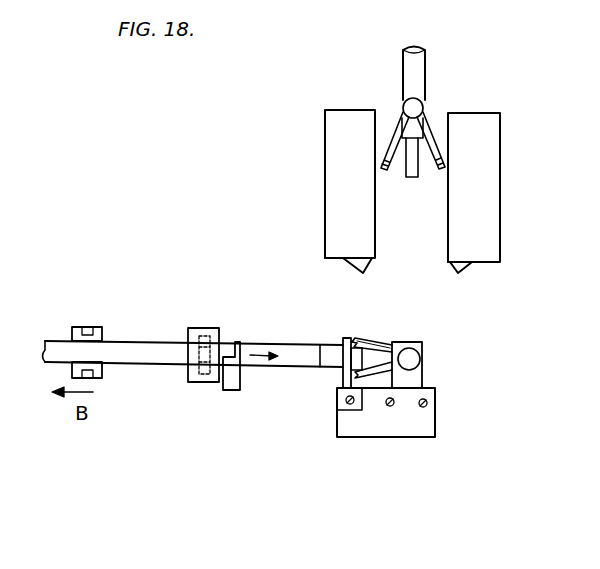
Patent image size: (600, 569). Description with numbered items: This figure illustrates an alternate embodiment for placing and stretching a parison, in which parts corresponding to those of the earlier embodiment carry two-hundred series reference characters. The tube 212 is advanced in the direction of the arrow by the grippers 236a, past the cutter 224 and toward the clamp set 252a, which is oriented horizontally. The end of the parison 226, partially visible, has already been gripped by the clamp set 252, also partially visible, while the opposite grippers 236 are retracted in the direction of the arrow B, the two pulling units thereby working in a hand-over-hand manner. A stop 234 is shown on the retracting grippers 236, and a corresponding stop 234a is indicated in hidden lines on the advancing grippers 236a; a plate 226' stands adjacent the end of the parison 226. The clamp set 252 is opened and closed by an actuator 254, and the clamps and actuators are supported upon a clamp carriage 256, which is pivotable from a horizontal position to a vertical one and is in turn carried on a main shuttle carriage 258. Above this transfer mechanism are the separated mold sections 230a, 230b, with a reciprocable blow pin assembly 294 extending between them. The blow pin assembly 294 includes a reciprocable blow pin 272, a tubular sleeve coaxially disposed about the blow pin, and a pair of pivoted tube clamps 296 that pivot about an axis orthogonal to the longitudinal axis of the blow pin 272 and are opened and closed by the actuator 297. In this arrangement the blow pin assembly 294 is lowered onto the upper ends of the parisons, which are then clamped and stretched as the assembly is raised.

The blow pin assembly 294 is at (446, 57).
The actuator 297 is at (418, 106).
The tube clamps 296 is at (393, 127).
The blow pin 272 is at (412, 177).
The mold section 230a is at (325, 145).
The mold section 230b is at (493, 128).
The tube 212 is at (145, 342).
The grippers 236 is at (107, 332).
The stop 234 is at (88, 378).
The grippers 236a is at (205, 357).
The hidden stop 234a is at (212, 328).
The cutter 224 is at (230, 390).
The parison 226 is at (301, 370).
The plate 226' is at (337, 342).
The clamp set 252 is at (400, 328).
The clamp set 252a is at (378, 342).
The actuator 254 is at (412, 357).
The clamp carriage 256 is at (418, 377).
The main shuttle carriage 258 is at (412, 430).